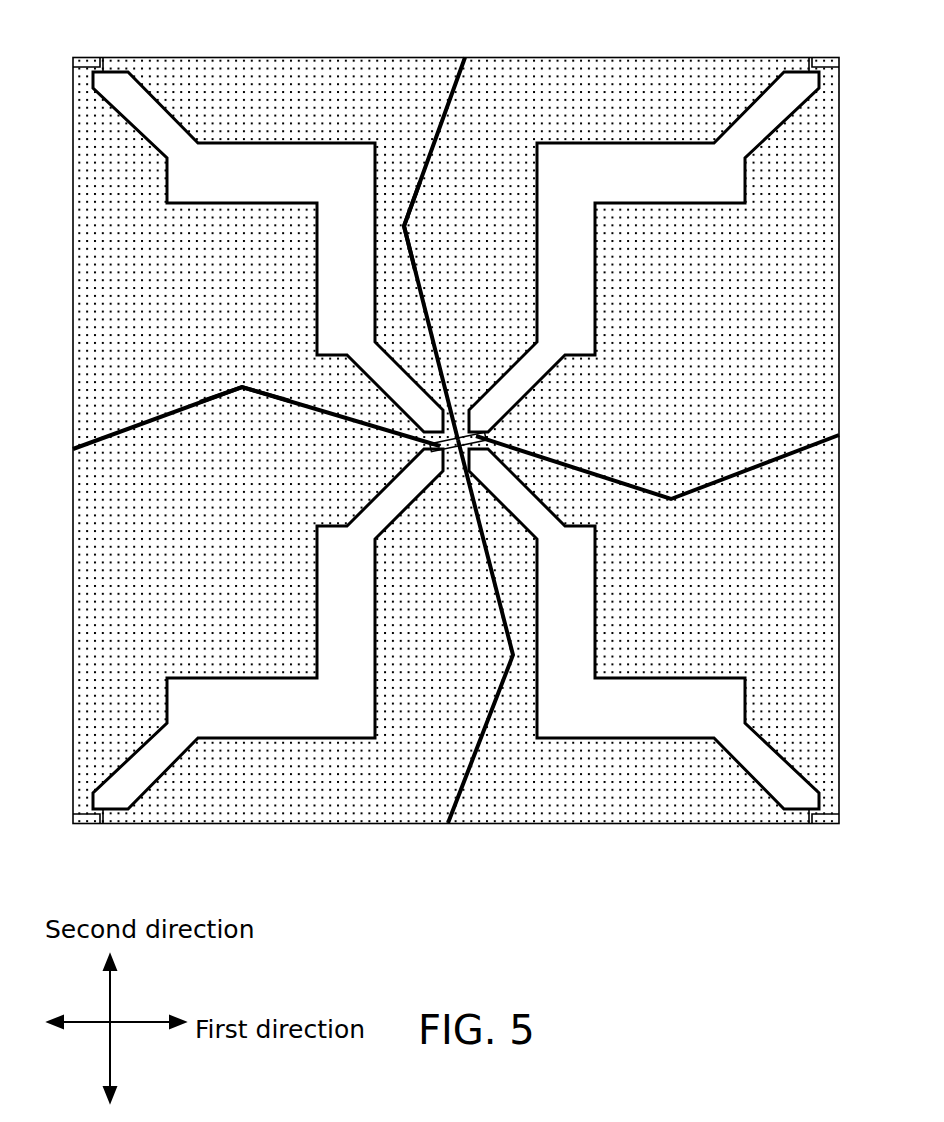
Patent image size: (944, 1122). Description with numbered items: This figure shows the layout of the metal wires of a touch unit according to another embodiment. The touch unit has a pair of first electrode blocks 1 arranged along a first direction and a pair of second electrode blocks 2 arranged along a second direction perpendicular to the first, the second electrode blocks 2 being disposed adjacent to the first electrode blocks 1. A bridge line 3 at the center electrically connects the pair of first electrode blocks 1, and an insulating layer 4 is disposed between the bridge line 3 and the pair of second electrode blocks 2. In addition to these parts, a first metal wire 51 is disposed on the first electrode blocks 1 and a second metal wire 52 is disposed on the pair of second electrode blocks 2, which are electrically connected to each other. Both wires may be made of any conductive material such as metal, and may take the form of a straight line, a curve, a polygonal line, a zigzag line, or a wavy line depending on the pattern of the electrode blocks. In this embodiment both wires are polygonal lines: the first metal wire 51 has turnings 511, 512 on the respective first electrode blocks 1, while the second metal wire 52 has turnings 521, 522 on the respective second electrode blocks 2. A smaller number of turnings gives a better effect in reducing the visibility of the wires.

The first electrode block 1 is at (95, 537).
The second electrode block 2 is at (297, 78).
The bridge line 3 is at (440, 440).
The insulating layer 4 is at (418, 458).
The first metal wire 51 is at (125, 430).
The turning 511 is at (240, 393).
The turning 512 is at (672, 497).
The second metal wire 52 is at (447, 102).
The turning 521 is at (405, 226).
The turning 522 is at (510, 657).